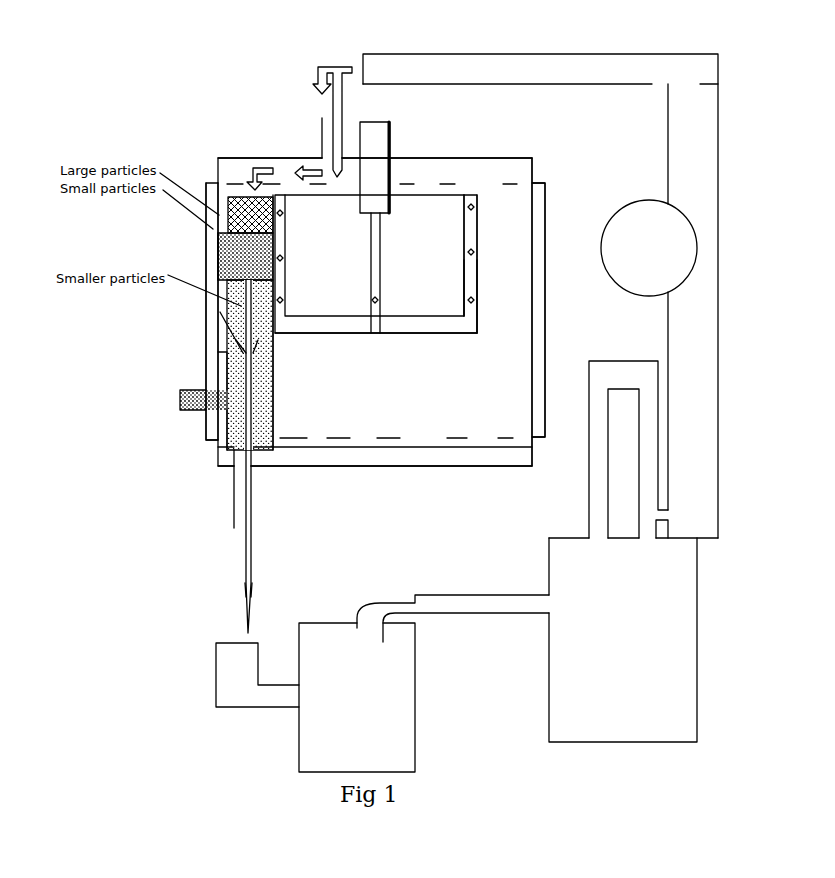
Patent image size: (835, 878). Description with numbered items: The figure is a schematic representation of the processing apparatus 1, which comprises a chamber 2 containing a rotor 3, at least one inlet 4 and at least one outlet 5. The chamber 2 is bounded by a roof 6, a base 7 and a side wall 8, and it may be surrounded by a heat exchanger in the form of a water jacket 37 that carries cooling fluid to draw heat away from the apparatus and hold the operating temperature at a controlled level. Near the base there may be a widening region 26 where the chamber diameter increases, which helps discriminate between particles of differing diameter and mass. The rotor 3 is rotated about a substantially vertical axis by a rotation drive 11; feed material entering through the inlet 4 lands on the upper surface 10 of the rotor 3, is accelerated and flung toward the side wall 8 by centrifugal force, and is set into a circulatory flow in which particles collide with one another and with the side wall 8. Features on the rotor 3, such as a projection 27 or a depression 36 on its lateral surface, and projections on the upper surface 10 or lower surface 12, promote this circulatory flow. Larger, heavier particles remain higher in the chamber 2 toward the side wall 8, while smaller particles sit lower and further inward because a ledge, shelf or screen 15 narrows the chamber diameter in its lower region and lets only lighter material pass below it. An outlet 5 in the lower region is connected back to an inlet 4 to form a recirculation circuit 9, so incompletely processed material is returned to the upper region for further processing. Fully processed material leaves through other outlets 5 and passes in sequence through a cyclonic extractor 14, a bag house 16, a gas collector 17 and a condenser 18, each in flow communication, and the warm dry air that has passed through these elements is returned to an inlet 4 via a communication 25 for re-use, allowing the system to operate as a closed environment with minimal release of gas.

The processing apparatus 1 is at (206, 166).
The chamber 2 is at (502, 238).
The rotor 3 is at (218, 268).
The inlet 4 is at (323, 127).
The outlet 5 is at (244, 493).
The roof 6 is at (499, 156).
The base 7 is at (313, 470).
The side wall 8 is at (541, 176).
The recirculation circuit 9 is at (192, 391).
The upper surface 10 is at (440, 190).
The rotation drive 11 is at (377, 152).
The lower surface 12 is at (405, 337).
The cyclonic extractor 14 is at (306, 681).
The ledge, shelf or screen 15 is at (236, 345).
The bag house 16 is at (546, 645).
The gas collector 17 is at (587, 504).
The condenser 18 is at (636, 262).
The communication 25 is at (536, 55).
The widening region 26 is at (475, 251).
The projection 27 is at (477, 281).
The depression 36 is at (381, 319).
The water jacket 37 is at (206, 421).